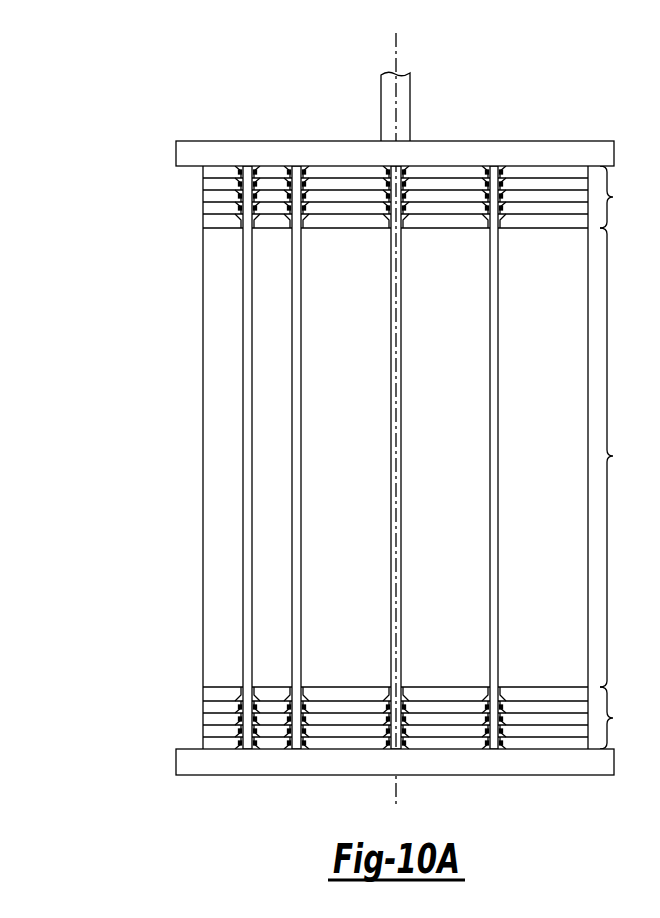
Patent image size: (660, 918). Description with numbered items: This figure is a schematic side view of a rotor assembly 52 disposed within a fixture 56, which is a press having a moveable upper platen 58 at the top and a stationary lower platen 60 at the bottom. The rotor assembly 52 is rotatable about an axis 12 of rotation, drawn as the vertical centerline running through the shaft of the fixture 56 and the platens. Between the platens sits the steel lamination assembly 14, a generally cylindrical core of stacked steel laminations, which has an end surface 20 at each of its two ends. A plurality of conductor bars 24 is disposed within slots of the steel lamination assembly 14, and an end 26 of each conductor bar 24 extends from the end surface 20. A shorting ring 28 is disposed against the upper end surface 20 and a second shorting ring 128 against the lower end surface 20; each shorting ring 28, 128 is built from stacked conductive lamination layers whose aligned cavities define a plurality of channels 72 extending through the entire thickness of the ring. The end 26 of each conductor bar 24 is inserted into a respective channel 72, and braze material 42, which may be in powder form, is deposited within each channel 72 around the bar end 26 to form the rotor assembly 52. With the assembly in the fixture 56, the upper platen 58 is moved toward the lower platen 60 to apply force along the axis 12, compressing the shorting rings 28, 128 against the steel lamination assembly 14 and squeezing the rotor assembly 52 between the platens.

The axis of rotation 12 is at (397, 50).
The steel lamination assembly 14 is at (422, 457).
The end surface 20 is at (560, 226).
The conductor bar 24 is at (302, 458).
The end 26 is at (494, 166).
The shorting ring 28 is at (422, 197).
The shorting ring 128 is at (426, 718).
The braze material 42 is at (236, 177).
The rotor assembly 52 is at (143, 422).
The fixture 56 is at (410, 108).
The upper platen 58 is at (582, 141).
The lower platen 60 is at (289, 775).
The channel 72 is at (289, 156).